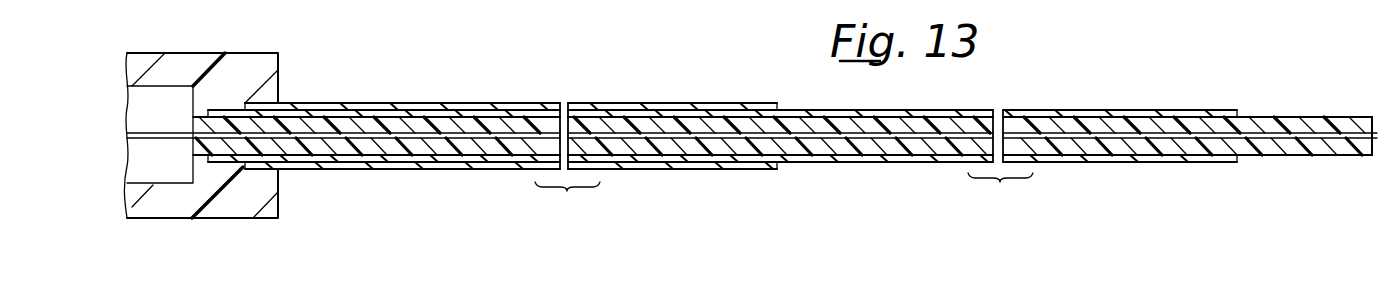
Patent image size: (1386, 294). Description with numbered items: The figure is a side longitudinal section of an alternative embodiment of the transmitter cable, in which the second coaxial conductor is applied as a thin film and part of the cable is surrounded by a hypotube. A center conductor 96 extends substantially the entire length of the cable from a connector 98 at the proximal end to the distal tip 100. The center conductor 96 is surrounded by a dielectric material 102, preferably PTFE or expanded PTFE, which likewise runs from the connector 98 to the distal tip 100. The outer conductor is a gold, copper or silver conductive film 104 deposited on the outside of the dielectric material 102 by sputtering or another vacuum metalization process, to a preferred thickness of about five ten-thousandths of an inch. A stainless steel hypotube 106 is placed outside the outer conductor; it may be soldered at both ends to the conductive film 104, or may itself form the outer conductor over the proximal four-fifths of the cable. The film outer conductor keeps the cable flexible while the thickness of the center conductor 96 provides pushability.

The center conductor 96 is at (165, 128).
The connector 98 is at (238, 220).
The distal tip 100 is at (1374, 157).
The dielectric material 102 is at (493, 143).
The conductive film 104 is at (1090, 110).
The hypotube 106 is at (718, 101).